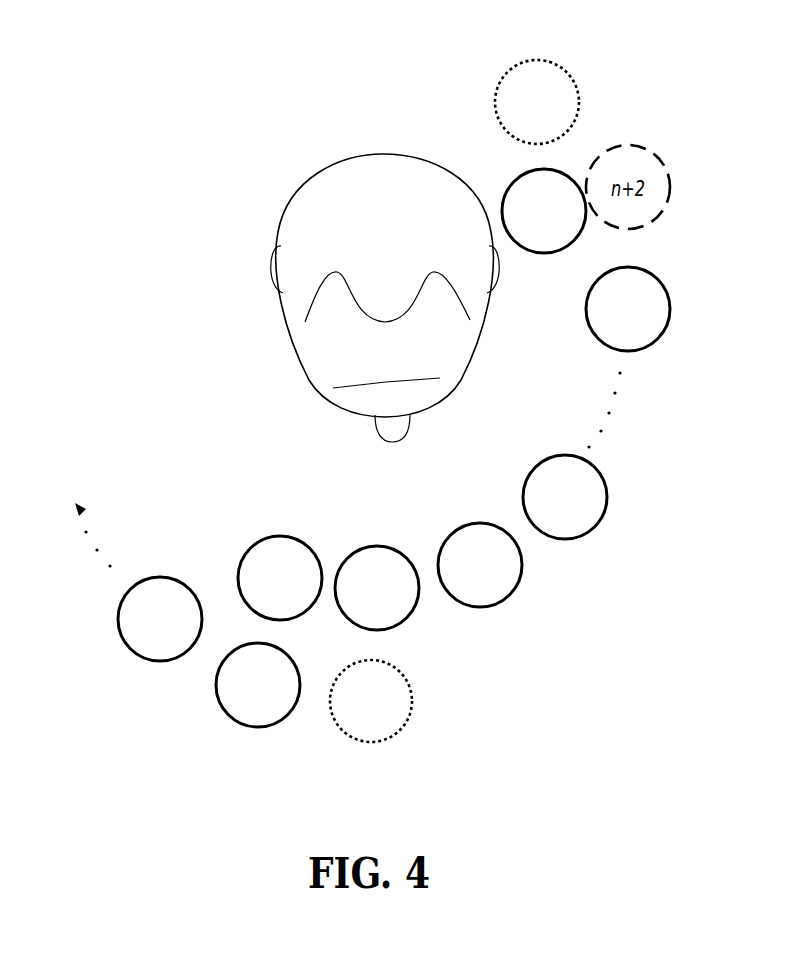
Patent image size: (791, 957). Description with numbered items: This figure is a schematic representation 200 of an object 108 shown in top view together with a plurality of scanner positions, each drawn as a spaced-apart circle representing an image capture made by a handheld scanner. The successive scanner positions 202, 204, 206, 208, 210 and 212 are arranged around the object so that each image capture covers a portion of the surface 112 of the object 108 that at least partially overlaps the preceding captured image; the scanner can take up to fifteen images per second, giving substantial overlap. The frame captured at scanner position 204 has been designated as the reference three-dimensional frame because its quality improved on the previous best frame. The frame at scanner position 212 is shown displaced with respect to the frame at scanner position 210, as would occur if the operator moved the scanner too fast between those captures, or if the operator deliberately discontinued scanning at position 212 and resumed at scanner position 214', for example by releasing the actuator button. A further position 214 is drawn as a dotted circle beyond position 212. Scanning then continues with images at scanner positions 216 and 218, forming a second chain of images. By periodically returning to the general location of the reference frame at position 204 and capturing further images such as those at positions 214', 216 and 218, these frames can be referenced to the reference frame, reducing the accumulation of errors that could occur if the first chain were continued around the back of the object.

The scanner position representation 200 is at (128, 88).
The object 108 is at (380, 168).
The surface 112 is at (388, 384).
The scanner position 202 is at (299, 604).
The scanner position 204 is at (396, 614).
The scanner position 206 is at (499, 591).
The scanner position 208 is at (584, 523).
The scanner position 210 is at (647, 335).
The scanner position 212 is at (563, 237).
The scanner position 214 is at (537, 95).
The scanner position 214' is at (405, 701).
The scanner position 216 is at (277, 711).
The scanner position 218 is at (179, 645).